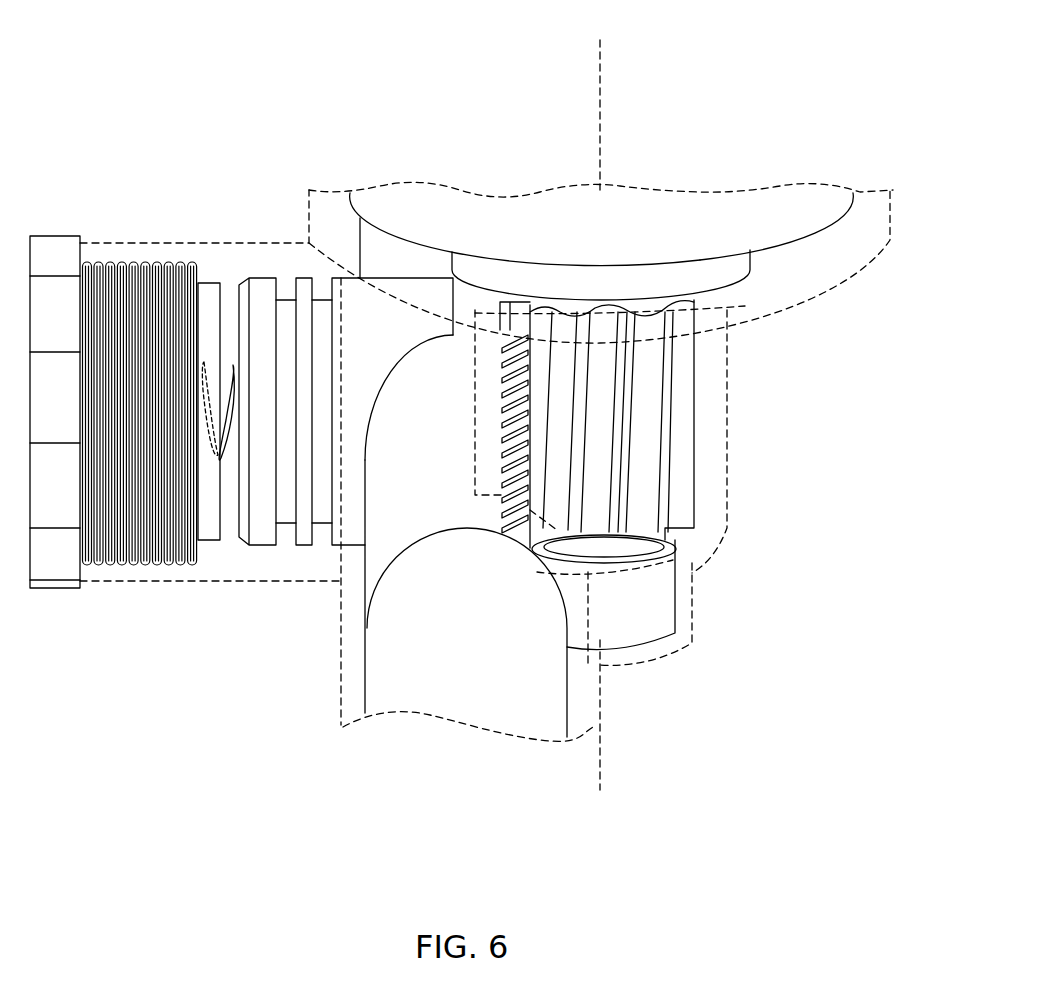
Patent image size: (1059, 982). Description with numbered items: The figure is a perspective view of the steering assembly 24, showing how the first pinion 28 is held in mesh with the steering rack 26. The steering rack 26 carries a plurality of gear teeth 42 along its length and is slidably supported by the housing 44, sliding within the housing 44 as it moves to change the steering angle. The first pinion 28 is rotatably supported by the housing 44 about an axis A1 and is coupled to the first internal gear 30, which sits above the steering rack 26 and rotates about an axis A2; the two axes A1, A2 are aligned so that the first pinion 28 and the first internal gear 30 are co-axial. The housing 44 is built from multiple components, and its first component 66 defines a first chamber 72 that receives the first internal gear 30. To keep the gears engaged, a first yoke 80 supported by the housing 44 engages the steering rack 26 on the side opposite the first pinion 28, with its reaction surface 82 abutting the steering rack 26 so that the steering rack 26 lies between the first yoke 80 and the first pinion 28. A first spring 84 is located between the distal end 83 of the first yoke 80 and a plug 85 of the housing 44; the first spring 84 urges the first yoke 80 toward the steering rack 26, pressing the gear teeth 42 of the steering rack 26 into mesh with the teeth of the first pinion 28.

The steering assembly 24 is at (204, 80).
The steering rack 26 is at (450, 682).
The first pinion 28 is at (647, 402).
The first internal gear 30 is at (695, 218).
The gear teeth 42 is at (532, 467).
The housing 44 is at (343, 680).
The first component 66 is at (307, 207).
The first chamber 72 is at (783, 217).
The first yoke 80 is at (388, 337).
The reaction surface 82 is at (403, 357).
The distal end 83 is at (258, 540).
The first spring 84 is at (228, 365).
The plug 85 is at (55, 570).
The axis A1 is at (600, 60).
The axis A2 is at (655, 411).